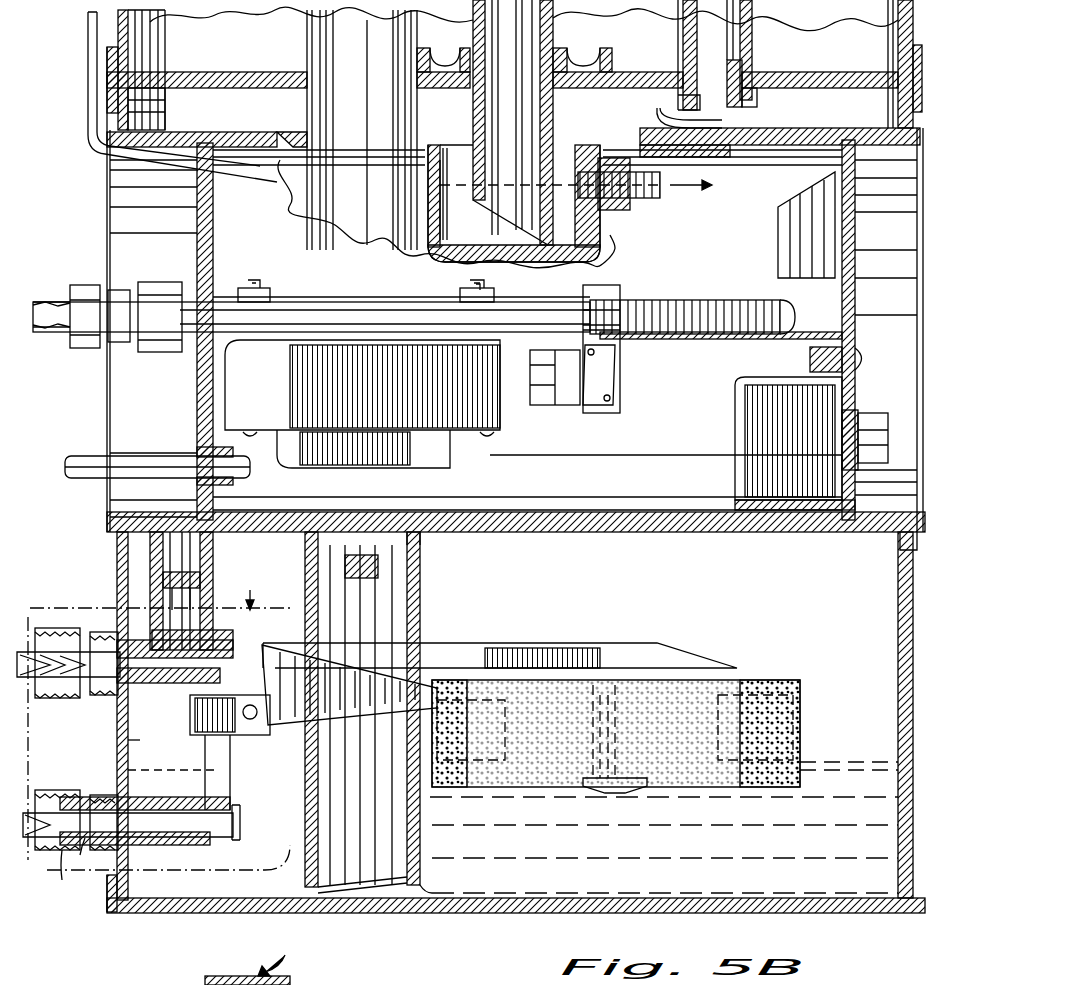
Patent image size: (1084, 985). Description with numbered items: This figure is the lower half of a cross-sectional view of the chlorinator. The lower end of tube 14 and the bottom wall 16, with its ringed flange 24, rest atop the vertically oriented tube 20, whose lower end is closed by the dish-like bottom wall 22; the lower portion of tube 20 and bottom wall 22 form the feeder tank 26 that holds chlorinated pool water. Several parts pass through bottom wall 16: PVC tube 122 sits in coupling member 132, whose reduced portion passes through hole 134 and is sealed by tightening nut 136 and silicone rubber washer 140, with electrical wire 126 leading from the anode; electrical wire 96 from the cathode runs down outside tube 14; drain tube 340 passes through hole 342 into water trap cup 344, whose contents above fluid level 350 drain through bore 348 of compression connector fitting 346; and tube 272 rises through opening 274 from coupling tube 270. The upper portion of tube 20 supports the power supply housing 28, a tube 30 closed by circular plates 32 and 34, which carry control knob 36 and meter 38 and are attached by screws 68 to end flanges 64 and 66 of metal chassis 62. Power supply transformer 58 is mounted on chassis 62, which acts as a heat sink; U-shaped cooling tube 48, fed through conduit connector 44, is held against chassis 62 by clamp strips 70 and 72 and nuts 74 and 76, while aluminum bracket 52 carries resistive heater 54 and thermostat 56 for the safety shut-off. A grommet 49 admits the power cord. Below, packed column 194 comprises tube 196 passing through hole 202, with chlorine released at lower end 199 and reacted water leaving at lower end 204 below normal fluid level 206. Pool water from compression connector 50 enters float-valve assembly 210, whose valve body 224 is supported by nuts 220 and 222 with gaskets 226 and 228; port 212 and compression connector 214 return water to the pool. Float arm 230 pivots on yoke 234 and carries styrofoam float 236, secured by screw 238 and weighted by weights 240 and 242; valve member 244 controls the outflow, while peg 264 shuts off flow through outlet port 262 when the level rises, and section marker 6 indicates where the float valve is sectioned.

The vertically-oriented PVC tube 272 is at (198, 20).
The electrical wire 96 is at (88, 92).
The opening 274 is at (200, 72).
The bottom wall 16 is at (608, 78).
The hole 134 is at (775, 78).
The hole 202 is at (310, 72).
The electrical wire 126 is at (232, 105).
The drain tube 340 is at (550, 40).
The hole 342 is at (480, 58).
The water trap cup 344 is at (438, 135).
The fluid level 350 is at (452, 175).
The compression connector fitting 346 is at (620, 212).
The longitudinal bore 348 is at (650, 198).
The PVC coupling member 132 is at (680, 62).
The tightening nut 136 is at (660, 112).
The PVC tube 122 is at (752, 35).
The silicone rubber washer 140 is at (750, 75).
The tube 14 is at (915, 30).
The ringed flange 24 is at (923, 66).
The power supply housing 28 is at (938, 295).
The circular plate 34 is at (195, 220).
The end flange 66 is at (195, 373).
The circular plate 32 is at (855, 285).
The meter 38 is at (855, 228).
The cooling tube 48 is at (568, 312).
The conduit connector 44 is at (68, 285).
The nut 76 is at (256, 280).
The clamp strip 72 is at (280, 295).
The nut 74 is at (460, 290).
The clamp strip 70 is at (495, 295).
The aluminum bracket 52 is at (618, 290).
The metal chassis 62 is at (688, 340).
The resistive heater 54 is at (615, 375).
The thermostat 56 is at (568, 400).
The power supply transformer 58 is at (375, 390).
The screws 68 is at (860, 358).
The end flange 64 is at (855, 390).
The control knob 36 is at (888, 425).
The grommet 49 is at (233, 482).
The polyvinyl chloride tube 30 is at (540, 528).
The feeder tank 26 is at (870, 703).
The tube 20 is at (913, 595).
The bottom wall 22 is at (422, 913).
The valve body 224 is at (130, 738).
The coupling tube 270 is at (215, 565).
The float-valve assembly 210 is at (250, 606).
The outlet port 262 is at (217, 618).
The compression connector 50 is at (40, 628).
The nut 220 is at (98, 632).
The compression connector 214 is at (75, 800).
The nut 222 is at (105, 795).
The sealing gasket 228 is at (135, 795).
The valve member 244 is at (245, 840).
The yoke 234 is at (190, 715).
The sealing gasket 226 is at (190, 720).
The peg 264 is at (262, 655).
The float arm 230 is at (600, 643).
The packed reaction column 194 is at (427, 580).
The tube 196 is at (420, 628).
The lower end 199 is at (362, 580).
The styrofoam float 236 is at (520, 790).
The weight 240 is at (505, 745).
The weight 242 is at (710, 735).
The screw 238 is at (622, 792).
The normal fluid level 206 is at (850, 768).
The lower end 204 is at (418, 882).
The section line 6 is at (62, 880).
The second port 212 is at (80, 855).